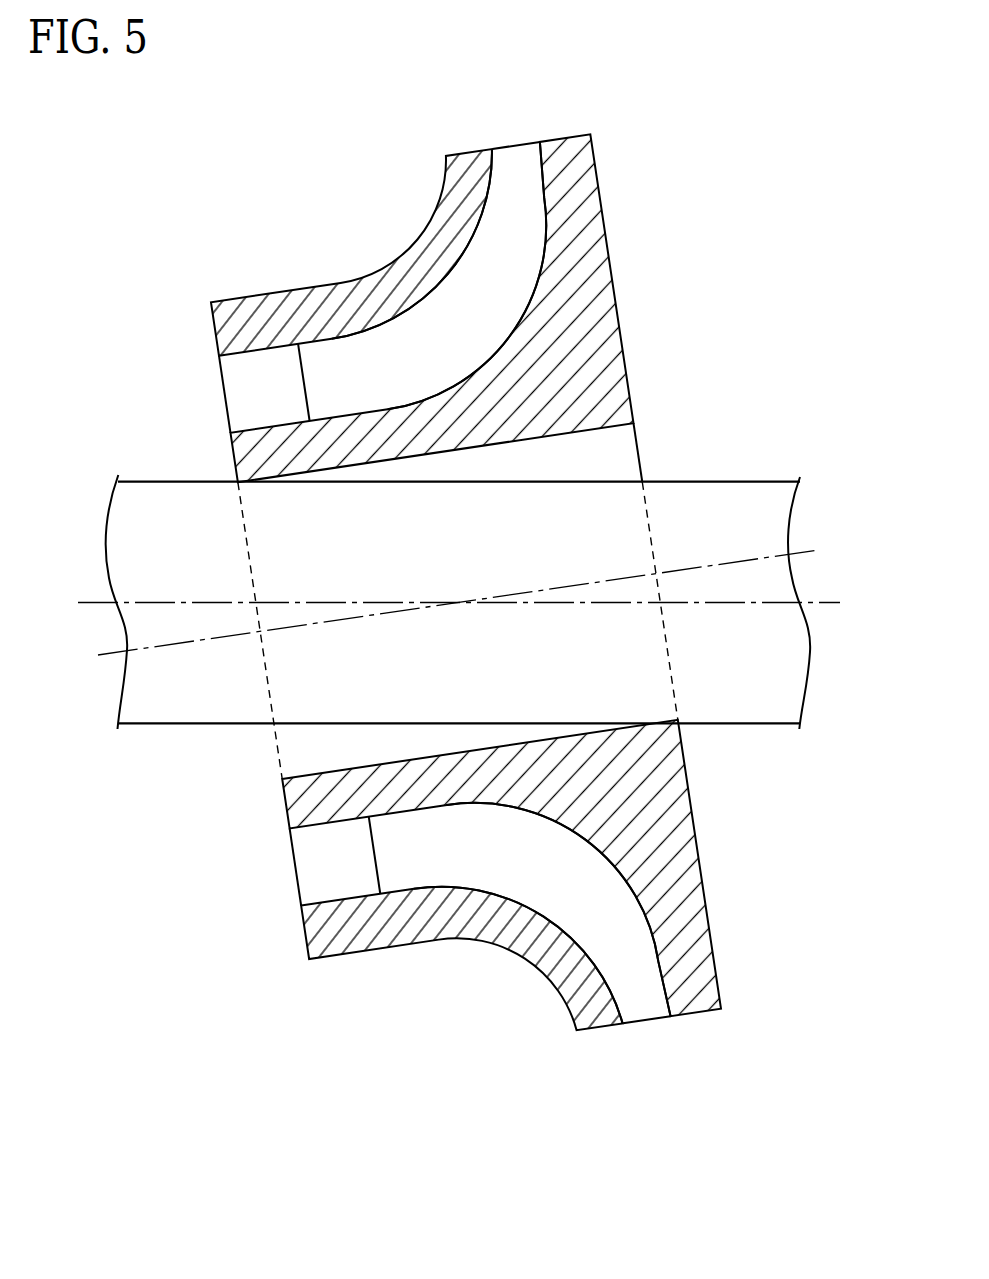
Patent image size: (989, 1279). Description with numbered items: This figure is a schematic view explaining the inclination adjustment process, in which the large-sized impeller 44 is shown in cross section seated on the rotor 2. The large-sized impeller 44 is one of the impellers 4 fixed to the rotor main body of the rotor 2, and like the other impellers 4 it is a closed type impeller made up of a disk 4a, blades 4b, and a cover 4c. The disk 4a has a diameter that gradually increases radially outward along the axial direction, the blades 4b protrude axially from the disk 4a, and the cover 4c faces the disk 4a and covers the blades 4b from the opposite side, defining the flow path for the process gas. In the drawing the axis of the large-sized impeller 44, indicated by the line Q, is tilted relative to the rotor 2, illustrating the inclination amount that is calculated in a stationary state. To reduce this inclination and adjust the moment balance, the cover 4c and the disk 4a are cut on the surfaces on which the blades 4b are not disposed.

The rotor 2 is at (725, 498).
The impeller axis (inclined) Q is at (832, 606).
The large-sized impeller 44 is at (606, 181).
The impeller 4 is at (521, 648).
The disk 4a is at (520, 953).
The blade 4b is at (627, 962).
The cover 4c is at (673, 863).